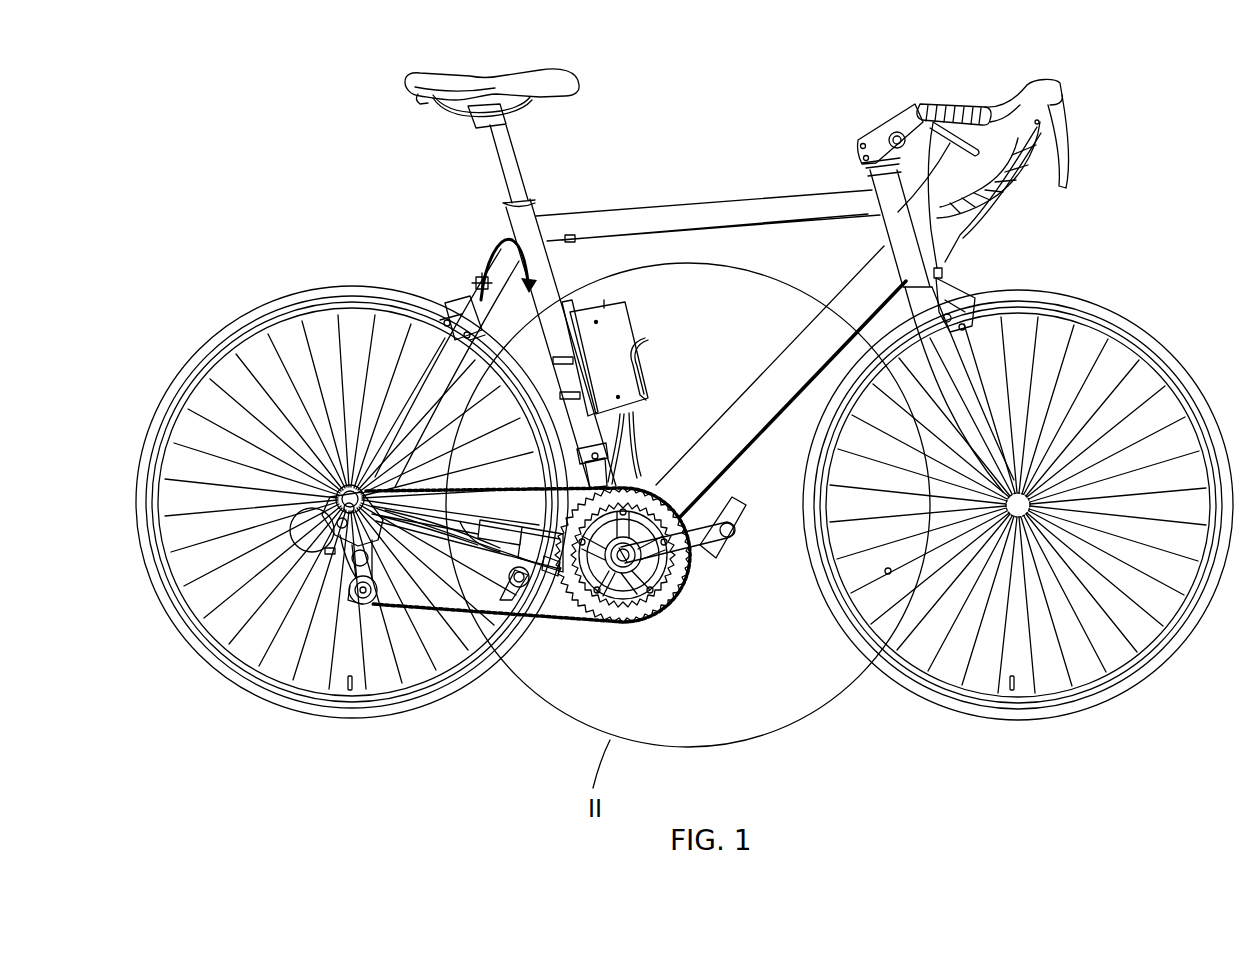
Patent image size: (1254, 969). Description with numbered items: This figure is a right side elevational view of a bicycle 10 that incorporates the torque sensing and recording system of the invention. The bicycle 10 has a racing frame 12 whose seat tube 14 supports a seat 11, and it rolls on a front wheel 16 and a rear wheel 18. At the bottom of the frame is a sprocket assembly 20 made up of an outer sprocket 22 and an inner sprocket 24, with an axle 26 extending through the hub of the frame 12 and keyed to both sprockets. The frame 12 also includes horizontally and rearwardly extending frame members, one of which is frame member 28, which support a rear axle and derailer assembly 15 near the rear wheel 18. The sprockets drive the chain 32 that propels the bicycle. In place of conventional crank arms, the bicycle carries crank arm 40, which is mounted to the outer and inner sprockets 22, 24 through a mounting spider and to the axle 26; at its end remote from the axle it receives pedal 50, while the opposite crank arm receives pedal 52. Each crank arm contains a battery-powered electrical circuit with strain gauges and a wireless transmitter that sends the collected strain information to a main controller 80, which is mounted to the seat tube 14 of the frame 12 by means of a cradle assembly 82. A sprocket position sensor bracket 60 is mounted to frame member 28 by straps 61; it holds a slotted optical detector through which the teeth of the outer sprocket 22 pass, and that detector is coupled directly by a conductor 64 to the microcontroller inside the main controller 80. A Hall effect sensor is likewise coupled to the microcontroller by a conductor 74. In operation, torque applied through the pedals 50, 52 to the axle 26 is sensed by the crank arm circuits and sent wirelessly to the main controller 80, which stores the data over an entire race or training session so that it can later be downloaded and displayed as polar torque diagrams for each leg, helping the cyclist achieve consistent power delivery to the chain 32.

The bicycle 10 is at (1160, 80).
The seat 11 is at (560, 70).
The racing frame 12 is at (485, 283).
The seat tube 14 is at (547, 275).
The rear axle and derailer assembly 15 is at (275, 500).
The front wheel 16 is at (952, 700).
The rear wheel 18 is at (317, 708).
The sprocket assembly 20 is at (586, 632).
The outer sprocket 22 is at (612, 620).
The inner sprocket 24 is at (672, 580).
The axle 26 is at (612, 593).
The frame member 28 is at (420, 595).
The chain 32 is at (553, 620).
The crank arm 40 is at (697, 578).
The pedal 50 is at (733, 552).
The pedal 52 is at (518, 590).
The sprocket position sensor bracket 60 is at (548, 600).
The straps 61 is at (478, 562).
The conductor 64 is at (500, 570).
The conductor 74 is at (623, 463).
The main controller 80 is at (623, 322).
The cradle assembly 82 is at (650, 360).